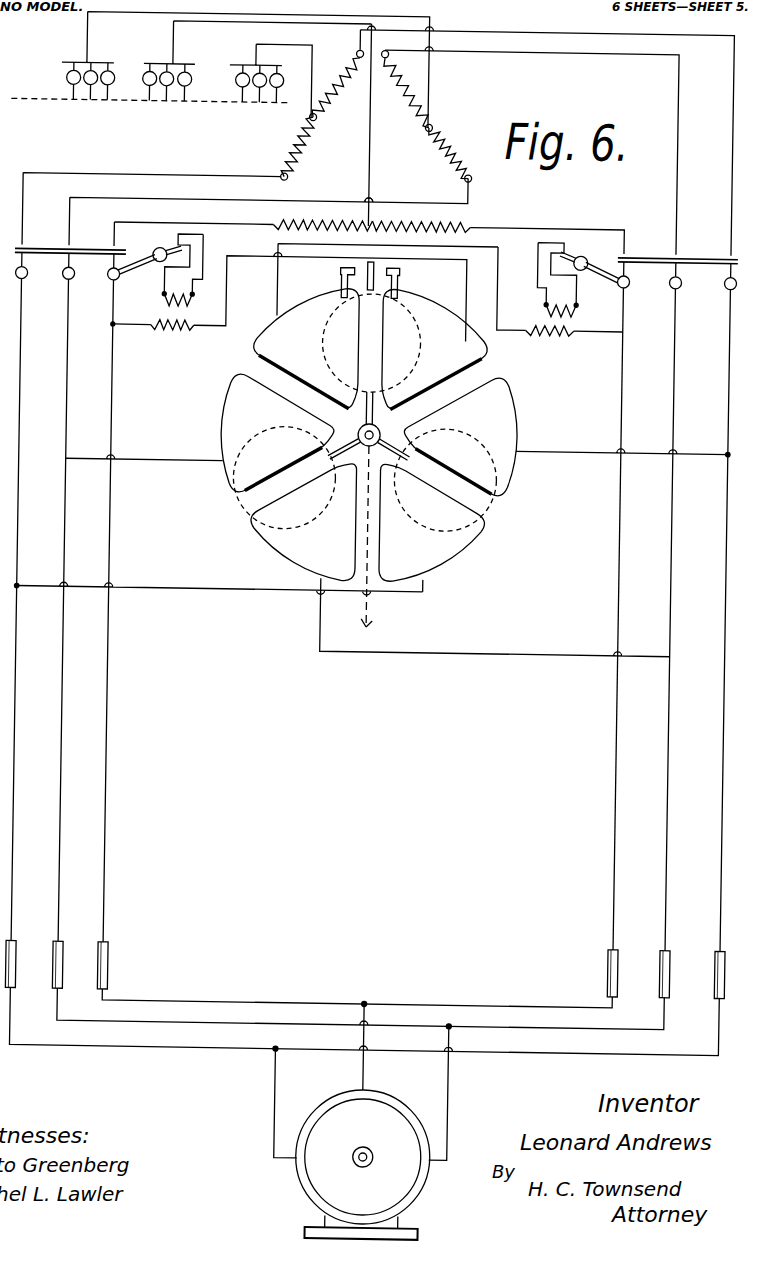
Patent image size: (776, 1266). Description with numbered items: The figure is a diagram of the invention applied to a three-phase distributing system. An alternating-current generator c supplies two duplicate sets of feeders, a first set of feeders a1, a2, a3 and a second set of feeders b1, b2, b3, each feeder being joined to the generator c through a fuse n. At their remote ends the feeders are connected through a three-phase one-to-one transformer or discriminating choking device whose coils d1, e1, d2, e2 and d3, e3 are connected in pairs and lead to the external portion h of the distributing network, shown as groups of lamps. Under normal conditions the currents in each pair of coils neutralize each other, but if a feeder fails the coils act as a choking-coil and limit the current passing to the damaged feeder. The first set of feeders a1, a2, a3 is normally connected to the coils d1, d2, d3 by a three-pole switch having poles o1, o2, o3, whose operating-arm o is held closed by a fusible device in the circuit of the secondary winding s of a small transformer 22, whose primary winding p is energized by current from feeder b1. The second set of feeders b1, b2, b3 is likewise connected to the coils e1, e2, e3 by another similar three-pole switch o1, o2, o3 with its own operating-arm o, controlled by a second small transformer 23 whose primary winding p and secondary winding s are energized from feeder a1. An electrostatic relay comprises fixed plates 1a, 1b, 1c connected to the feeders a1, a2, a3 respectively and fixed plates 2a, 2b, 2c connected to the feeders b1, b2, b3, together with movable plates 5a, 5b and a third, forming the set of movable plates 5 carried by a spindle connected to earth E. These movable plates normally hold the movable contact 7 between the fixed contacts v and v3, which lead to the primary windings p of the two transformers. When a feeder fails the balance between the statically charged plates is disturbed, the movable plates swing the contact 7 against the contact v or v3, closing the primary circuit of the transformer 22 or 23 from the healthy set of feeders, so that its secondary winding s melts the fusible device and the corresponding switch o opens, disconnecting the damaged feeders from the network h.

The external portion of the distributing network h is at (220, 69).
The coil e3 is at (338, 73).
The coil d3 is at (297, 138).
The coil e2 is at (412, 89).
The coil d2 is at (461, 148).
The coil d1 is at (243, 211).
The coil e1 is at (498, 225).
The switch pole o3 is at (736, 241).
The switch pole o2 is at (681, 241).
The switch pole o1 is at (629, 241).
The operating-arm of switch-lever o is at (368, 276).
The secondary winding s is at (370, 272).
The small transformer 22 is at (166, 304).
The second small transformer 23 is at (572, 316).
The primary winding p is at (367, 302).
The fixed plate 1a is at (306, 348).
The fixed plate 2a is at (434, 350).
The fixed plate 1b is at (277, 433).
The fixed plate 2c is at (460, 436).
The fixed plate 2b is at (303, 521).
The fixed plate 1c is at (432, 523).
The movable plates 5 is at (369, 402).
The movable plate 5a is at (446, 480).
The movable plate 5b is at (285, 478).
The fixed contact v is at (341, 272).
The brush v3 is at (400, 272).
The movable contact 7 is at (376, 263).
The commutator axis / earth connection E is at (378, 540).
The feeder a1 is at (123, 399).
The feeder a2 is at (78, 404).
The feeder a3 is at (31, 394).
The feeder b1 is at (631, 400).
The feeder b2 is at (683, 400).
The feeder b3 is at (738, 394).
The fuse n is at (742, 956).
The alternating-current generator c is at (362, 1164).